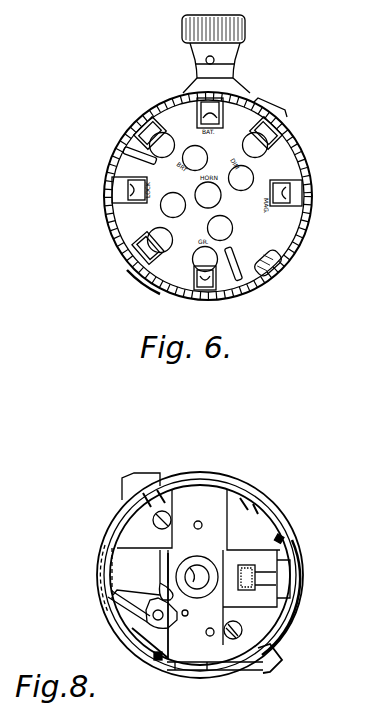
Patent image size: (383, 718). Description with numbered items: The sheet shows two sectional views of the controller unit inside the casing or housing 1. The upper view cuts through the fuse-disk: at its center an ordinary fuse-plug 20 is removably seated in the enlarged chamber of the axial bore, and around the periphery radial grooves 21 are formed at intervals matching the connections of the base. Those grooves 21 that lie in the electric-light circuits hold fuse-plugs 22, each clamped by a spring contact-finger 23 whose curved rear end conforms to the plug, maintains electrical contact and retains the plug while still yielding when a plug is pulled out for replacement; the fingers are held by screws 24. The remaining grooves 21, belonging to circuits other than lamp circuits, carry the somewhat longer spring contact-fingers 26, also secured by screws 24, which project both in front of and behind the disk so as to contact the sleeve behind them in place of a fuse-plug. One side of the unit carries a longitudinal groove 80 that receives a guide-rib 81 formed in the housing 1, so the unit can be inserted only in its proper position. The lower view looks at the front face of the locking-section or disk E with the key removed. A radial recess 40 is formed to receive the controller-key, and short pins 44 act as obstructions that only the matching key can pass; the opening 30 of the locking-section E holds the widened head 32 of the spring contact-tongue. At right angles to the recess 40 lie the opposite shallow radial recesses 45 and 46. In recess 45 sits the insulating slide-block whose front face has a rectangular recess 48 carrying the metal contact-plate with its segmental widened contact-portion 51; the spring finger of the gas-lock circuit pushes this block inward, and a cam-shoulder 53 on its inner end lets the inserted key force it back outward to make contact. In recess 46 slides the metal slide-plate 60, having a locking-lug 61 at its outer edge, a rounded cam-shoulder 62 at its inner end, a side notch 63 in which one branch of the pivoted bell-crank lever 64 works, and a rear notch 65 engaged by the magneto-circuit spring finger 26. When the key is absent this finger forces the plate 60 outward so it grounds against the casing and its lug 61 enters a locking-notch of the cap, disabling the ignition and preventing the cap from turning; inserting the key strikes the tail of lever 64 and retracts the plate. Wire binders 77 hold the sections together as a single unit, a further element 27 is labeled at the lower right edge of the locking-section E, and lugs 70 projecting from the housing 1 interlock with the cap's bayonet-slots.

In FIG. 6, the casing or housing 1 is at (305, 152).
In FIG. 8, the casing or housing 1 is at (292, 556).
In FIG. 6, the fuse-plug 20 is at (216, 200).
In FIG. 6, the radial grooves 21 is at (142, 145).
In FIG. 6, the fuse-plugs 22 is at (196, 270).
In FIG. 6, the spring contact-fingers 23 is at (275, 132).
In FIG. 8, the spring contact-fingers 23 is at (288, 574).
In FIG. 6, the screws 24 is at (300, 207).
In FIG. 6, the spring contact-fingers 26 is at (290, 190).
In FIG. 6, the longitudinal groove 80 is at (268, 274).
In FIG. 6, the guide-rib 81 is at (272, 268).
In FIG. 8, the locking-section or disk E is at (238, 494).
In FIG. 8, the radial recess 40 is at (215, 486).
In FIG. 8, the opening 30 is at (212, 563).
In FIG. 8, the head 32 is at (197, 562).
In FIG. 8, the pins 44 is at (197, 520).
In FIG. 8, the recess 46 is at (130, 543).
In FIG. 8, the notch 65 is at (113, 563).
In FIG. 8, the locking-lug 61 is at (100, 571).
In FIG. 8, the cam-shoulder 62 is at (152, 597).
In FIG. 8, the slide-plate 60 is at (122, 588).
In FIG. 8, the notch 63 is at (128, 596).
In FIG. 8, the bell-crank lever 64 is at (163, 630).
In FIG. 8, the binders 77 is at (282, 541).
In FIG. 8, the segmental widened contact-portion 51 is at (265, 604).
In FIG. 8, the rectangular recess 48 is at (283, 585).
In FIG. 8, the recess 45 is at (248, 618).
In FIG. 8, the cam-shoulder 53 is at (226, 595).
In FIG. 8, the lug 27 is at (268, 668).
In FIG. 8, the lugs 70 is at (266, 671).